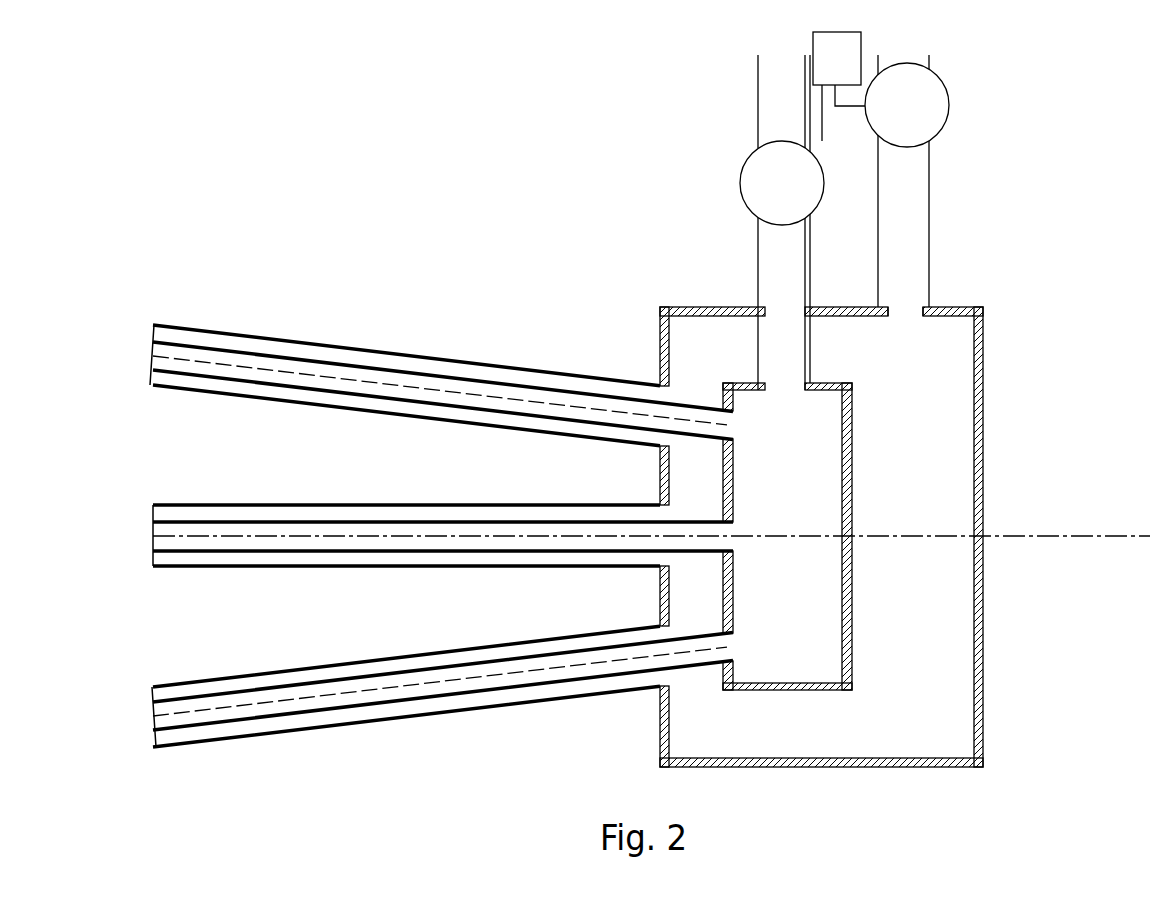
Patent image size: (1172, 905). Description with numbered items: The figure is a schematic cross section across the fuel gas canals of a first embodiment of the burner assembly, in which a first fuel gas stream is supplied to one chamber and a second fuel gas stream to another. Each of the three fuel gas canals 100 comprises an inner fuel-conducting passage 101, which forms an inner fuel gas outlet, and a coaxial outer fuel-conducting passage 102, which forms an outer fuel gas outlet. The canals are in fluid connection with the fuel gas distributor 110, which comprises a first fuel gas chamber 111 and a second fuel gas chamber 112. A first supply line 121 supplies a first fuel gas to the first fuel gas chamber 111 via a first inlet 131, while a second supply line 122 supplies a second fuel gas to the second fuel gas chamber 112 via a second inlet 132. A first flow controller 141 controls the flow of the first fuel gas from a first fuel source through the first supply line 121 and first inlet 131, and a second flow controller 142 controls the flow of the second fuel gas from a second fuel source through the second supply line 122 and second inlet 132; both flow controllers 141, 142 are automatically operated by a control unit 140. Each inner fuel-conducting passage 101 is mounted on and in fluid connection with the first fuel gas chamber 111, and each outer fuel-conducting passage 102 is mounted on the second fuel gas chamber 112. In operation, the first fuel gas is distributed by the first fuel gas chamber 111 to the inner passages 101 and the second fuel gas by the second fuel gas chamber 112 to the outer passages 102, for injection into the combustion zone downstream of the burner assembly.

The fuel gas canal 100 is at (400, 543).
The inner fuel-conducting passage 101 is at (144, 363).
The outer fuel-conducting passage 102 is at (396, 355).
The fuel gas distributor 110 is at (1032, 452).
The first fuel gas chamber 111 is at (787, 536).
The second fuel gas chamber 112 is at (821, 741).
The first supply line 121 is at (785, 283).
The second supply line 122 is at (912, 240).
The first inlet 131 is at (784, 391).
The second inlet 132 is at (906, 316).
The control unit 140 is at (823, 73).
The first flow controller 141 is at (782, 183).
The second flow controller 142 is at (907, 105).